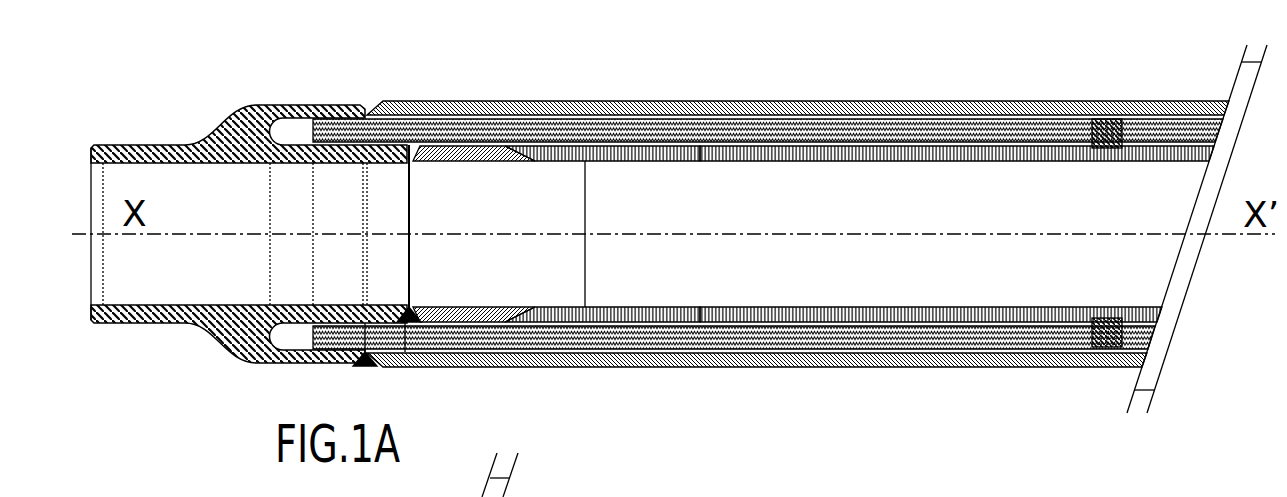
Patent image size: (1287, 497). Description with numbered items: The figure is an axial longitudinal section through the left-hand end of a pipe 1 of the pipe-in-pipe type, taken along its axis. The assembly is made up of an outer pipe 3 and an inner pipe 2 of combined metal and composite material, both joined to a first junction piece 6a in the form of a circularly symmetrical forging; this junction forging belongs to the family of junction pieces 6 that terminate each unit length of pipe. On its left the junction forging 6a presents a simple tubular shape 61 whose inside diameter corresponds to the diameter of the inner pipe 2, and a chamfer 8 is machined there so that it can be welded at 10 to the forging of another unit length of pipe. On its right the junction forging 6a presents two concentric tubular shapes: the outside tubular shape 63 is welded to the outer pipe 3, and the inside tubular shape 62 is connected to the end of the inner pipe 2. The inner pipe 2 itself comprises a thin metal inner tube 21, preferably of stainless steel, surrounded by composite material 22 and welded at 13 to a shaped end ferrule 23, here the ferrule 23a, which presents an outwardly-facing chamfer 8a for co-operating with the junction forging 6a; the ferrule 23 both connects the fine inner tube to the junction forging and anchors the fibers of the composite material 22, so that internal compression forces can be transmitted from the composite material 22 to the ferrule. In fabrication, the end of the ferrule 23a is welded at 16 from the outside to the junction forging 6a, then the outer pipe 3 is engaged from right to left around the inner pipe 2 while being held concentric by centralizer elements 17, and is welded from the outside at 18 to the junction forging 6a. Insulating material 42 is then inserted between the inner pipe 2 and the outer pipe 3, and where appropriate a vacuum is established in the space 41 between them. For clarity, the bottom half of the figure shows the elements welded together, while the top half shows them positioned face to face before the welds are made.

The pipe 1 is at (214, 65).
The end piece tube 6 is at (249, 229).
The first junction piece 6a is at (213, 128).
The simple tubular shape 61 is at (135, 324).
The inside tubular shape 62 is at (340, 163).
The outside tubular shape 63 is at (313, 106).
The outwardly-facing chamfer 8a is at (408, 145).
The outer pipe 3 is at (584, 101).
The space 41 is at (697, 119).
The insulating material 42 is at (806, 119).
The centralizer element 17 is at (1108, 119).
The inner pipe 2 is at (813, 234).
The shaped end ferrule 23 is at (491, 234).
The shaped end ferrule 23a is at (525, 162).
The composite material 22 is at (600, 162).
The inner tube 21 is at (927, 234).
The weld 13 is at (583, 264).
The weld 16 is at (410, 266).
The weld 18 is at (363, 268).
The weld 10 is at (366, 368).
The chamfer 8 is at (905, 495).